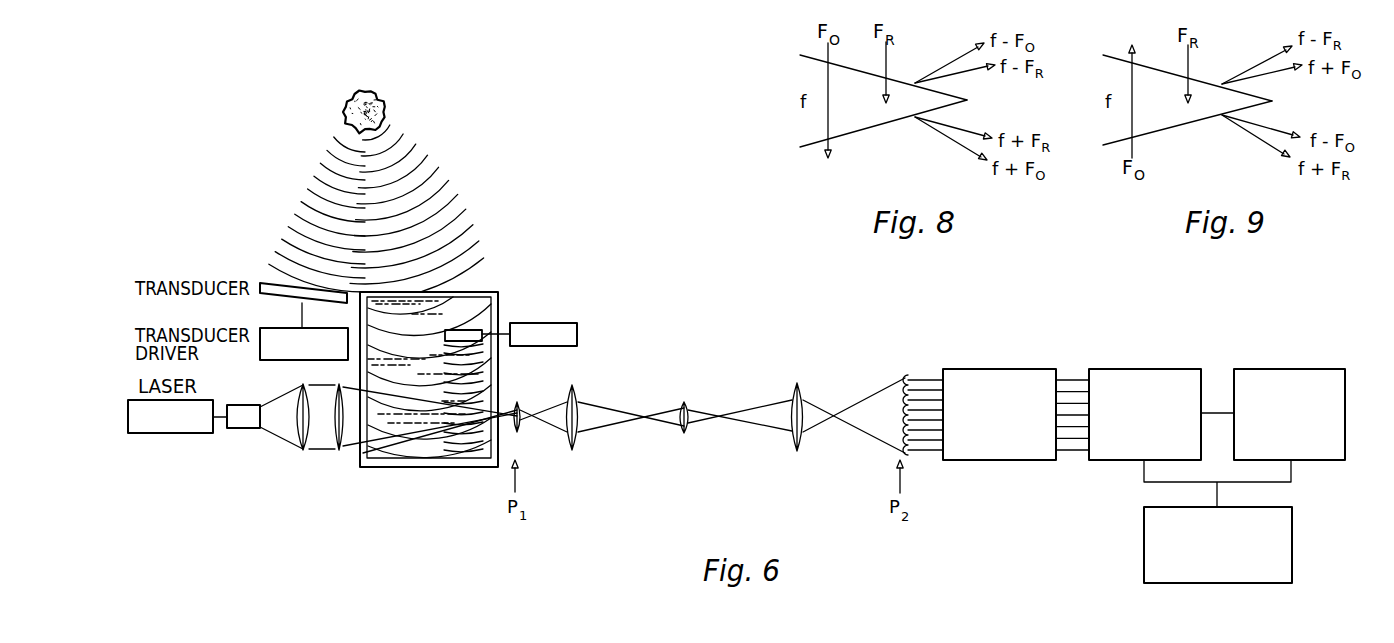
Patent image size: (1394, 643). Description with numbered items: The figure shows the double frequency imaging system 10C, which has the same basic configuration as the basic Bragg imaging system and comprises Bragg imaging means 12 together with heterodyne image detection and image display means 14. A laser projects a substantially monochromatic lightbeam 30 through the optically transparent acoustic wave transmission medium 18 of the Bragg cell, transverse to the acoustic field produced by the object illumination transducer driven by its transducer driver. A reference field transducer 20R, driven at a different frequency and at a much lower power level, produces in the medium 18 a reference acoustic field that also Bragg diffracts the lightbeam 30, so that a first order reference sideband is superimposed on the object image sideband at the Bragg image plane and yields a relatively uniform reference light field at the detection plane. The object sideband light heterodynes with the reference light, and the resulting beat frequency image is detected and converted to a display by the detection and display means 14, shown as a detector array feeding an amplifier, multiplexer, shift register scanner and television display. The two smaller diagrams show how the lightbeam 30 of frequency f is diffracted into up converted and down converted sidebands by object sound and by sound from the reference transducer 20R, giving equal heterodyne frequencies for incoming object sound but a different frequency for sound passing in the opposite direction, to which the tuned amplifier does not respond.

In FIG. 6, the imaging system 10C is at (747, 328).
In FIG. 6, the Bragg imaging means 12 is at (468, 371).
In FIG. 6, the heterodyne image detection and image display means 14 is at (1040, 318).
In FIG. 6, the acoustic wave transmission medium 18 is at (482, 318).
In FIG. 6, the reference field acoustic source or transducer 20R is at (474, 340).
In FIG. 6, the lightbeam 30 is at (366, 452).
In FIG. 8, the lightbeam 30 is at (882, 127).